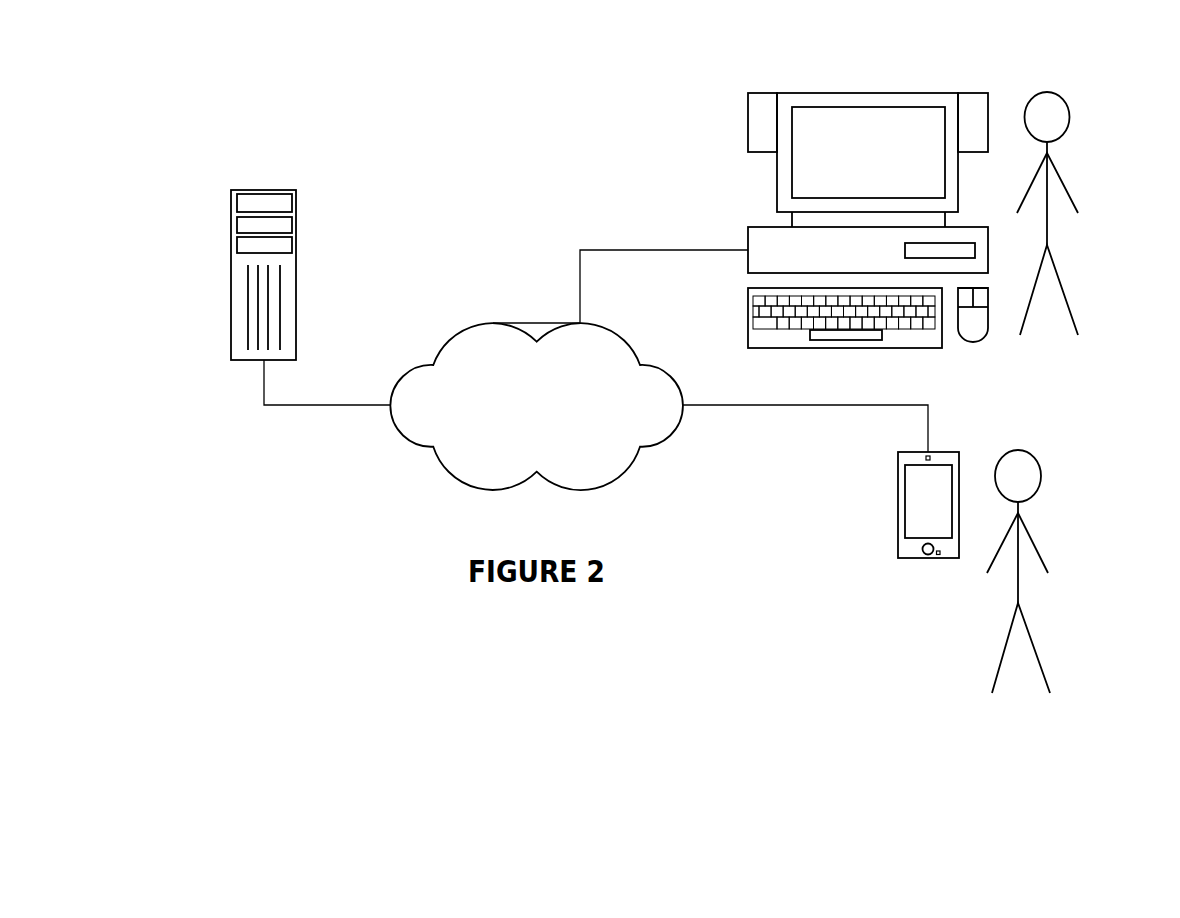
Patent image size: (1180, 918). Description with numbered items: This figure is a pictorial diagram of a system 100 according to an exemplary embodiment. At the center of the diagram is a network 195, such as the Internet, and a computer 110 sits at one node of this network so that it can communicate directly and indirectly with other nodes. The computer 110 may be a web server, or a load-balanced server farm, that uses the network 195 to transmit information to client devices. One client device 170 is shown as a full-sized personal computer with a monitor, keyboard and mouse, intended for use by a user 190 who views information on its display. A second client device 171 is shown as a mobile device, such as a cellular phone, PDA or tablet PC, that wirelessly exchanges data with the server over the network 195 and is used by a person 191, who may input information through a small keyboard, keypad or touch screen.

The system 100 is at (272, 52).
The computer 110 is at (230, 200).
The network 195 is at (493, 322).
The client device 170 is at (775, 185).
The user 190 is at (1071, 165).
The client device 171 is at (896, 471).
The person 191 is at (1040, 513).